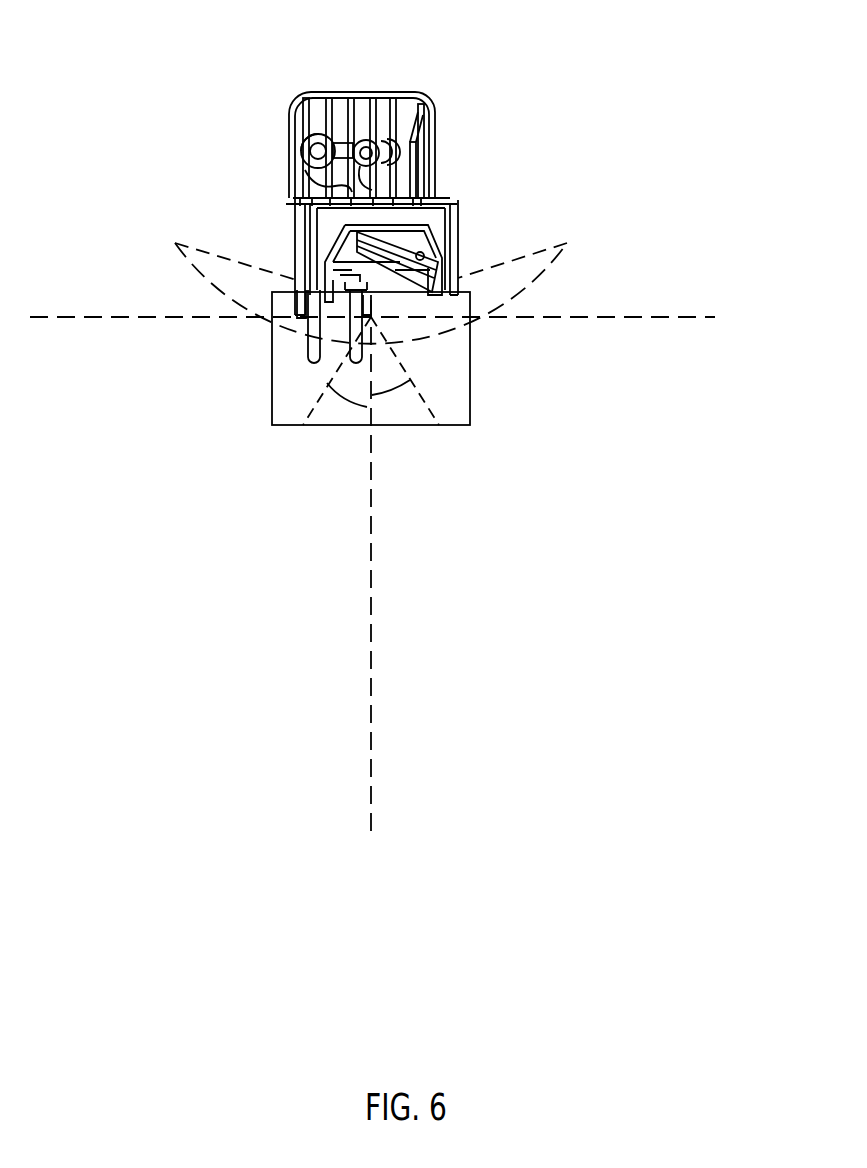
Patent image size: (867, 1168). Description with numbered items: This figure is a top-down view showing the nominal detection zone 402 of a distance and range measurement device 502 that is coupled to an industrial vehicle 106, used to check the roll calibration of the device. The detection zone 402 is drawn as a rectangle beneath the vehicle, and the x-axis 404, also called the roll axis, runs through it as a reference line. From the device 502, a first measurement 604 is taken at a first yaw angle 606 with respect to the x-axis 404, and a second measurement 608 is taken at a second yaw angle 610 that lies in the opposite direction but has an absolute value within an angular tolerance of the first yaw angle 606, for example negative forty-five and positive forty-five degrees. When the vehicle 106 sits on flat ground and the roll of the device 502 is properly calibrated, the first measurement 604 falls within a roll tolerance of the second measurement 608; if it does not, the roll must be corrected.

The industrial vehicle 106 is at (384, 186).
The detection zone 402 is at (288, 298).
The distance and range measurement device 502 is at (458, 278).
The x-axis 404 is at (371, 757).
The first measurement 604 is at (395, 350).
The first yaw angle 606 is at (397, 392).
The second measurement 608 is at (317, 400).
The second yaw angle 610 is at (345, 400).